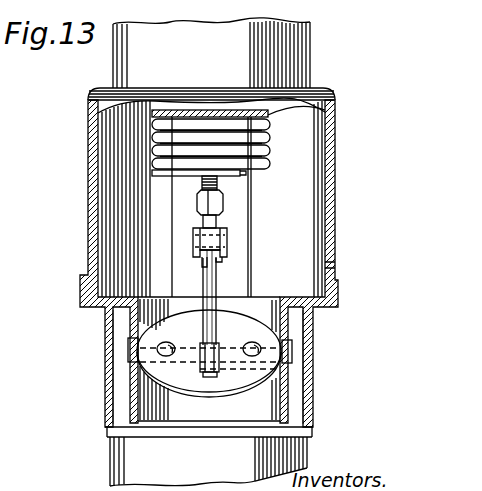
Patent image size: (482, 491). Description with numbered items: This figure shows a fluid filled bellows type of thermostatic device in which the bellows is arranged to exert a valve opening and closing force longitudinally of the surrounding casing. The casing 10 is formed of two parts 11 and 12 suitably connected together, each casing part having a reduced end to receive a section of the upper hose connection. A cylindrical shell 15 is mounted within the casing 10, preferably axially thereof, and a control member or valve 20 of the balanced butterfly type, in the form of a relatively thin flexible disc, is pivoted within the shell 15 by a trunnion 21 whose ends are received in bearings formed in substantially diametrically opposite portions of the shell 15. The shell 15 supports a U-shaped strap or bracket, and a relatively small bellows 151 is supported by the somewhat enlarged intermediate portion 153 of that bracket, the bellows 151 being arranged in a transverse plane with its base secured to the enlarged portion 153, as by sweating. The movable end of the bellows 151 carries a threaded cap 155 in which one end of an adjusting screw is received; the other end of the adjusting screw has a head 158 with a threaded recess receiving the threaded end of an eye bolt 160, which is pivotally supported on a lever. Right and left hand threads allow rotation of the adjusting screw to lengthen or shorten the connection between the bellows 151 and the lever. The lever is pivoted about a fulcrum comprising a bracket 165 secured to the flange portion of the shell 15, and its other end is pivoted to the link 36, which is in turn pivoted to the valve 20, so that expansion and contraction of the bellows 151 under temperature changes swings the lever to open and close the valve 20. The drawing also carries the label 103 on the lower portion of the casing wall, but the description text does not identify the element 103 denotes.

The casing 10 is at (336, 164).
The casing part 11 is at (334, 186).
The casing part 12 is at (313, 418).
The cylindrical shell 15 is at (290, 393).
The valve 20 is at (270, 340).
The trunnion 21 is at (292, 355).
The link 36 is at (283, 373).
The partition plate 103 is at (336, 292).
The bellows 151 is at (270, 152).
The enlarged intermediate portion 153 is at (268, 122).
The threaded cap 155 is at (222, 203).
The head 158 is at (218, 224).
The eye bolt 160 is at (226, 268).
The bracket 165 is at (330, 265).